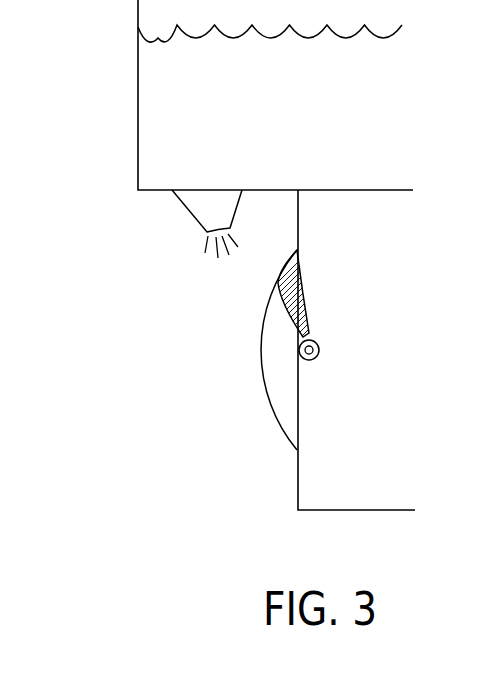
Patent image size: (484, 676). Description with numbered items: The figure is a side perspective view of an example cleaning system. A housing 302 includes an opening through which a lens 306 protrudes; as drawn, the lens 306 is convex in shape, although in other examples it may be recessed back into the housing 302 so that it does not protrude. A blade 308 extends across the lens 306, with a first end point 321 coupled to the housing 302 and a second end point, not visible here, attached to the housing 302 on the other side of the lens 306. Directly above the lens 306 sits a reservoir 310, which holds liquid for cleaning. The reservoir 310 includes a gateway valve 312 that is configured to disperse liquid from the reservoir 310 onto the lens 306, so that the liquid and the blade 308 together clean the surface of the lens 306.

The reservoir 310 is at (138, 95).
The gateway valve 312 is at (188, 212).
The housing 302 is at (358, 478).
The lens 306 is at (268, 402).
The blade 308 is at (304, 305).
The pivot 321 is at (319, 350).